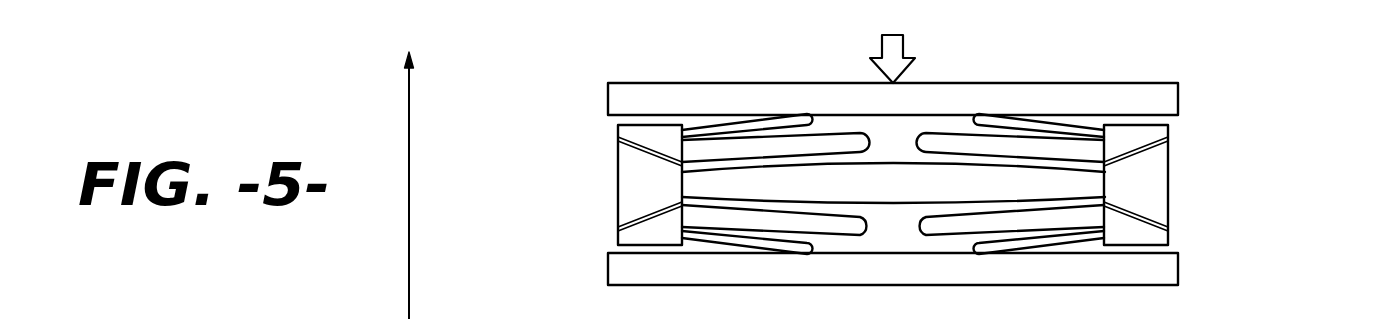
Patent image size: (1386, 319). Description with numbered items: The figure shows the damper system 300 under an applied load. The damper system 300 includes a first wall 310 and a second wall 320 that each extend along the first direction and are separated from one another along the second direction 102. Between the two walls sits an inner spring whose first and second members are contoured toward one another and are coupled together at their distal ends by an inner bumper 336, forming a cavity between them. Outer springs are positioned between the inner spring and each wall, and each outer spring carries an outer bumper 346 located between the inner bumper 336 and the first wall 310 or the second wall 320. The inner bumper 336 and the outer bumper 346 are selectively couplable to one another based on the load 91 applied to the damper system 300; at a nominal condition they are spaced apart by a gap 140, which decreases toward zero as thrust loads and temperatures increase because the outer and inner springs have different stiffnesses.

The damper system 300 is at (934, 182).
The first wall 310 is at (607, 99).
The second wall 320 is at (607, 272).
The inner bumper 336 is at (630, 180).
The outer bumper 346 is at (618, 140).
The gap 140 is at (1178, 140).
The load 91 is at (907, 50).
The second direction 102 is at (379, 185).